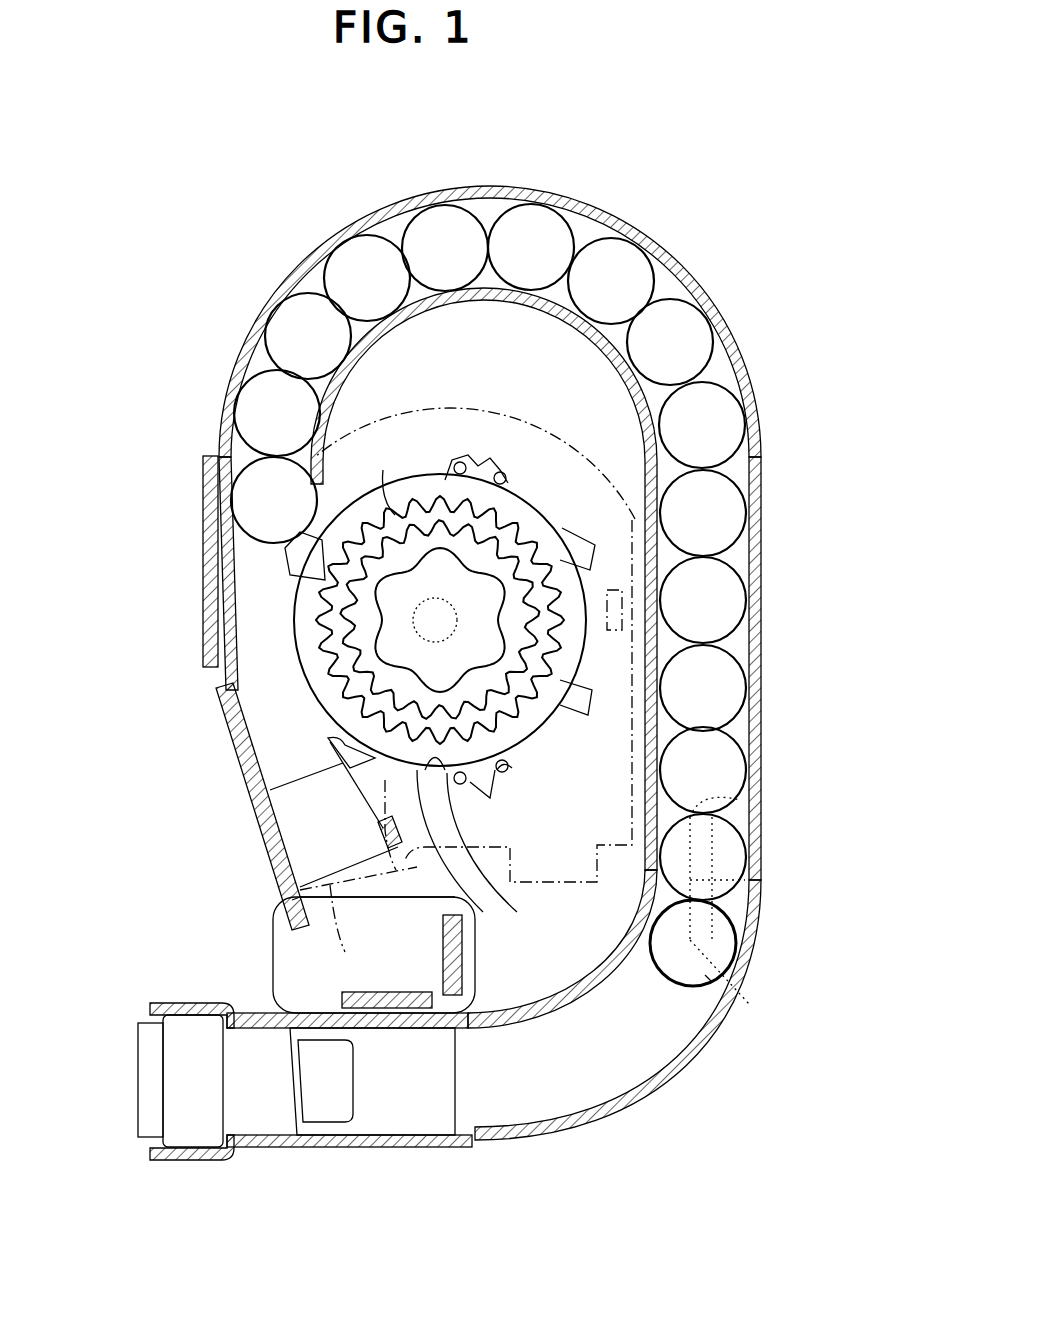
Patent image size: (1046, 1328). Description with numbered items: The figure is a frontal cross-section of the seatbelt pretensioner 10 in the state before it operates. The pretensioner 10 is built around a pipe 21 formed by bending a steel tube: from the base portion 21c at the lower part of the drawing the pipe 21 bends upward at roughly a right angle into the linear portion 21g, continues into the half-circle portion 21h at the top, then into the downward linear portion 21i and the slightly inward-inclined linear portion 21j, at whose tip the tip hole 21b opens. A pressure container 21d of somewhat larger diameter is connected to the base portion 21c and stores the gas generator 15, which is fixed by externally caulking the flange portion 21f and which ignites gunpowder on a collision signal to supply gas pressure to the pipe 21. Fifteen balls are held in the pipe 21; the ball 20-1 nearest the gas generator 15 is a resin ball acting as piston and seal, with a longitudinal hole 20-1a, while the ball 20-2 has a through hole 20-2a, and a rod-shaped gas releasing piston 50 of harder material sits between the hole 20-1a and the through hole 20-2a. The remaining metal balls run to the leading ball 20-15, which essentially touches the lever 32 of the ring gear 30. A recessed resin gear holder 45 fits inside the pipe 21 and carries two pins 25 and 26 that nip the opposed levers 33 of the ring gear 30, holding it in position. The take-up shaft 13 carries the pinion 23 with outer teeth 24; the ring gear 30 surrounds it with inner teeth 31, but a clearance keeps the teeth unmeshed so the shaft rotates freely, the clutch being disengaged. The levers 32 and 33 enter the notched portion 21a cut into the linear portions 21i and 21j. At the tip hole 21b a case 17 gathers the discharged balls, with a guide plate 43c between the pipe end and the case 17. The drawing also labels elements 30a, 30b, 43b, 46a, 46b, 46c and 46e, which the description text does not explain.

The pretensioner 10 is at (248, 260).
The take-up shaft 13 is at (435, 620).
The gas generator 15 is at (185, 1063).
The case 17 is at (323, 980).
The ball 20-1 is at (712, 932).
The hole 20-1a is at (745, 885).
The ball 20-2 is at (720, 862).
The through hole 20-2a is at (745, 810).
The leading ball 20-15 is at (265, 480).
The pipe 21 is at (760, 515).
The notched portion 21a is at (268, 795).
The tip hole 21b is at (422, 955).
The base portion 21c is at (490, 1140).
The pressure container 21d is at (330, 1147).
The flange portion 21f is at (150, 1148).
The linear portion 21g is at (765, 660).
The half-circle portion 21h is at (365, 210).
The linear portion 21i is at (222, 605).
The linear portion 21j is at (228, 732).
The pinion 23 is at (497, 770).
The outer teeth 24 is at (433, 475).
The pin 25 is at (493, 785).
The pin 26 is at (475, 458).
The ring gear 30 is at (575, 495).
The rotor arm 30a is at (516, 470).
The rotor arm 30b is at (383, 470).
The inner teeth 31 is at (323, 647).
The lever 32 is at (300, 558).
The lever 33 is at (468, 464).
The plate 43b is at (205, 515).
The guide plate 43c is at (277, 890).
The gear holder 45 is at (748, 395).
The lever portion 46a is at (410, 480).
The lever portion 46b is at (519, 866).
The lever portion 46c is at (607, 614).
The lever portion 46e is at (381, 946).
The gas releasing piston 50 is at (705, 975).